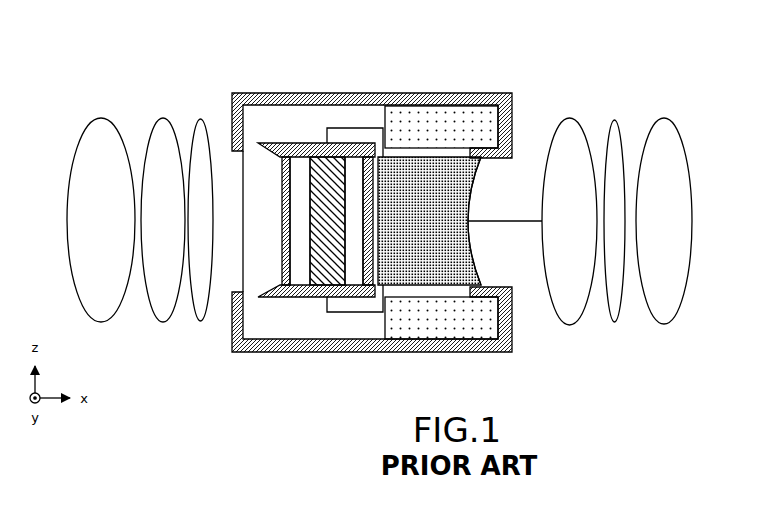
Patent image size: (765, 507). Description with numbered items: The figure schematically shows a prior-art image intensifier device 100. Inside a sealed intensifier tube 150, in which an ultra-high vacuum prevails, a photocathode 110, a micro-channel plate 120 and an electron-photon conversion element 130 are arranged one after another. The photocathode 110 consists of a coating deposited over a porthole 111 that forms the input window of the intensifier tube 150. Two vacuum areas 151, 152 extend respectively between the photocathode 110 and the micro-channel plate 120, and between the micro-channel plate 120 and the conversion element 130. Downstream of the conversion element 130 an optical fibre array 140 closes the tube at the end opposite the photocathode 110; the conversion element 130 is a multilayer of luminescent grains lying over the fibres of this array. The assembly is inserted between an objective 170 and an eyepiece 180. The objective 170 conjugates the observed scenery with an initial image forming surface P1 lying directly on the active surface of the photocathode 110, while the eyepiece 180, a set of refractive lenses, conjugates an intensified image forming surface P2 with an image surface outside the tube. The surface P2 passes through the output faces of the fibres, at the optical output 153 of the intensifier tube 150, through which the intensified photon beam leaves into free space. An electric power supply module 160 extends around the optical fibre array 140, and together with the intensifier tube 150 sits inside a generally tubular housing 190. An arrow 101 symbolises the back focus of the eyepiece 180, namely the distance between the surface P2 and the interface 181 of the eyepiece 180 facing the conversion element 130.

The image intensifier device 100 is at (169, 67).
The back focus 101 is at (533, 220).
The photocathode 110 is at (284, 270).
The porthole 111 is at (257, 210).
The micro-channel plate 120 is at (323, 273).
The electron-photon conversion element 130 is at (366, 263).
The optical fibre array 140 is at (428, 168).
The intensifier tube 150 is at (302, 120).
The area 151 is at (296, 165).
The area 152 is at (354, 165).
The optical output 153 is at (482, 267).
The electric power supply module 160 is at (468, 115).
The objective 170 is at (67, 110).
The eyepiece 180 is at (611, 183).
The interface 181 is at (564, 183).
The housing 190 is at (463, 353).
The initial image forming surface P1 is at (282, 213).
The intensified image forming surface P2 is at (490, 249).